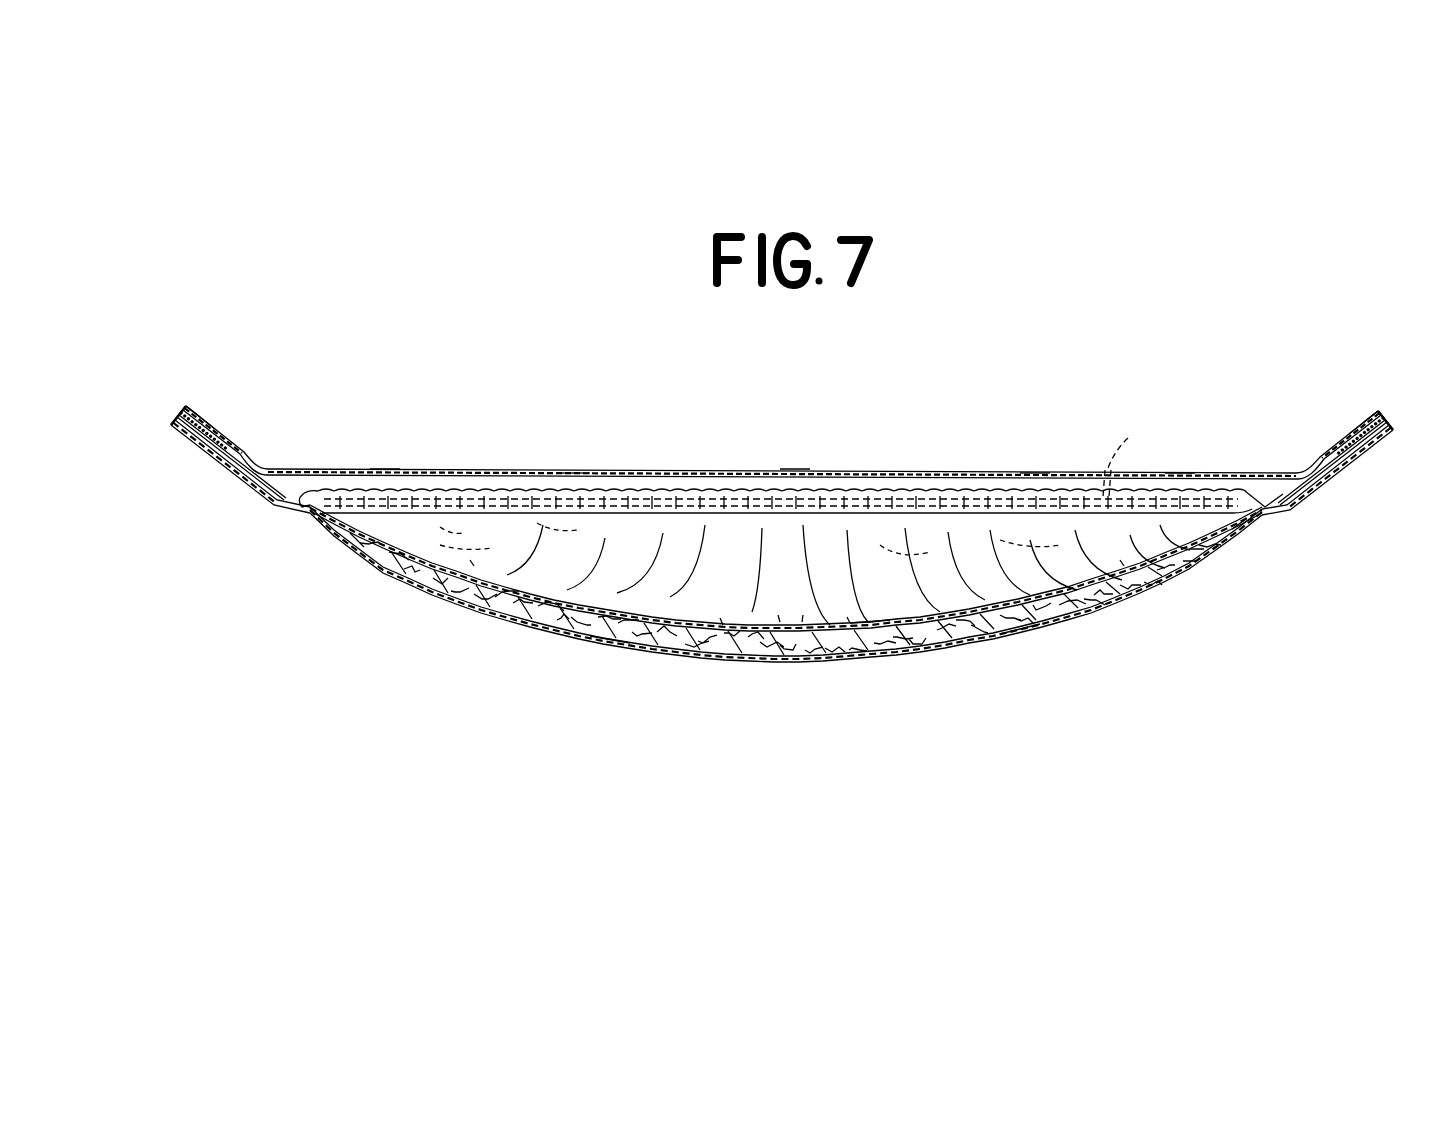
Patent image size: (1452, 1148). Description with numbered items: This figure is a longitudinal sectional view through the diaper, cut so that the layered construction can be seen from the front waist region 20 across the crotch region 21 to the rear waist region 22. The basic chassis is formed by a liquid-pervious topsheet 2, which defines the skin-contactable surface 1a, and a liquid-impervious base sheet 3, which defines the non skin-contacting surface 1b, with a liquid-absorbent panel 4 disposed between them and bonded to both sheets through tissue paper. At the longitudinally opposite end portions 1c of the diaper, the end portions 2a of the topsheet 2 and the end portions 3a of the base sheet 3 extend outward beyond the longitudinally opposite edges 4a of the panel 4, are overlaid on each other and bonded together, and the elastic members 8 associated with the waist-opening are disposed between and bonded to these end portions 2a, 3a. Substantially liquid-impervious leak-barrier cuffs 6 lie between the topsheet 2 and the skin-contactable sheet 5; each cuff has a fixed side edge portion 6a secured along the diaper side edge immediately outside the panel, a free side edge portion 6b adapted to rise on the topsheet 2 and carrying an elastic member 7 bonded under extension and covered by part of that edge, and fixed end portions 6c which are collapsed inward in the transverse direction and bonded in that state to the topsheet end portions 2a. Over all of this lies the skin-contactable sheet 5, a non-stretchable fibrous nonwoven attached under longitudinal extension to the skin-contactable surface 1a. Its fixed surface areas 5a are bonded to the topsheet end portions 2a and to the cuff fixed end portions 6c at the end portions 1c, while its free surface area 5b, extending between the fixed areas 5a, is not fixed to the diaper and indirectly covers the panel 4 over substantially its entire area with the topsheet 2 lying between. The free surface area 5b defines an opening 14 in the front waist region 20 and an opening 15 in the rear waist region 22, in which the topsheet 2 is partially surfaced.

The skin-contactable surface 1a is at (682, 628).
The non skin-contacting surface 1b is at (606, 645).
The longitudinally opposite end portions 1c is at (178, 430).
The topsheet 2 is at (935, 620).
The longitudinally opposite end portions of the topsheet 2a is at (228, 437).
The base sheet 3 is at (774, 664).
The longitudinally opposite end portions of the base sheet 3a is at (229, 470).
The liquid-absorbent panel 4 is at (735, 652).
The longitudinally opposite edges of the core 4a is at (294, 518).
The skin-contactable sheet 5 is at (1215, 470).
The fixed surface areas 5a is at (211, 432).
The free surface area 5b is at (385, 468).
The leak-barrier cuffs 6 is at (785, 473).
The fixed side edge portions 6a is at (870, 595).
The free side edge portions 6b is at (860, 520).
The fixed longitudinally opposite end portions 6c is at (193, 410).
The elastic members 7 is at (1124, 454).
The elastic members associated with the waist-opening 8 is at (200, 445).
The opening in the front waist region 14 is at (573, 478).
The opening in the rear waist region 15 is at (1037, 470).
The front waist region 20 is at (347, 538).
The crotch region 21 is at (1020, 635).
The rear waist region 22 is at (1294, 512).